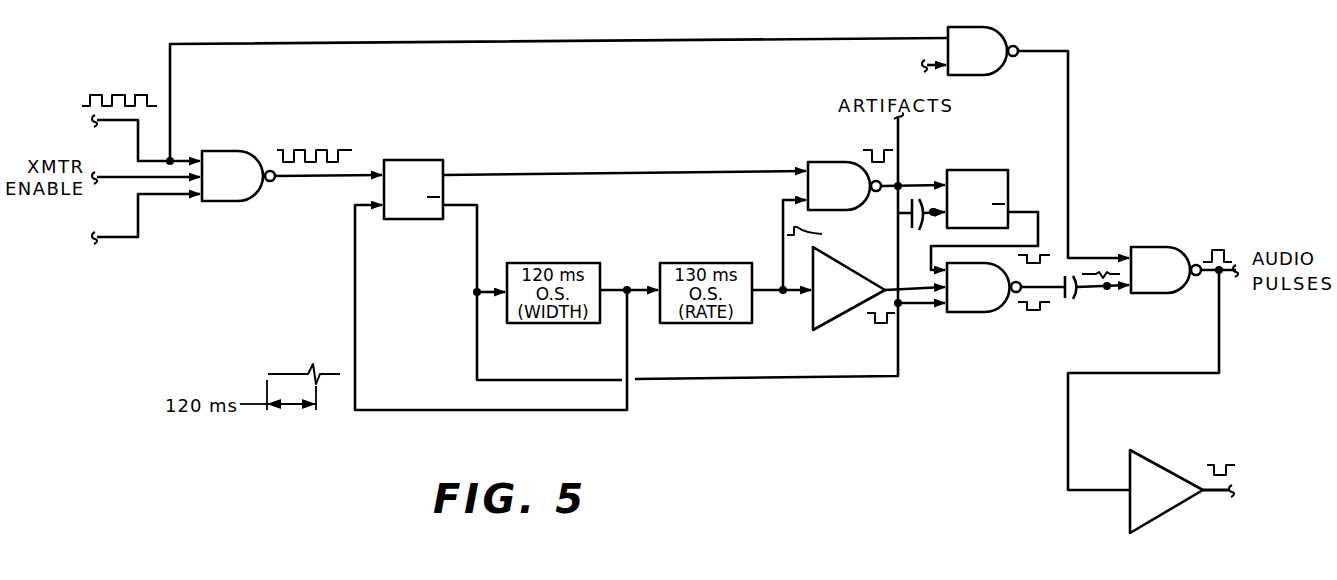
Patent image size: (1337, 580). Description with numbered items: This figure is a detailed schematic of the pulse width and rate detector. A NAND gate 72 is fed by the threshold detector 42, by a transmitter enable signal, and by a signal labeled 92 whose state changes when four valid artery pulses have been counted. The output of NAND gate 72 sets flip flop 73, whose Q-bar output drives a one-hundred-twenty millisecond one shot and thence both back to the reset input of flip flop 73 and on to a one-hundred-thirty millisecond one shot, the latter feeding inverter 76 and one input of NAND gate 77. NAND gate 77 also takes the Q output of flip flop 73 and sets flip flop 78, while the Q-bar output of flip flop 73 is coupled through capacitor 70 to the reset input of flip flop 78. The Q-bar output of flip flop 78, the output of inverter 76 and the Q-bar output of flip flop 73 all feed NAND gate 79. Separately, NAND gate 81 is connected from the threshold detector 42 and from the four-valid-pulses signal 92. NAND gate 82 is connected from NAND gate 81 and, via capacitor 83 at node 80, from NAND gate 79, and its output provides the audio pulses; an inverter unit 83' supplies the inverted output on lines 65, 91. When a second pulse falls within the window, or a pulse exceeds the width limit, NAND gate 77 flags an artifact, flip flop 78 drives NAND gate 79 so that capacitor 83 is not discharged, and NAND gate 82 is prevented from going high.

The threshold detector 42 is at (126, 128).
The capacitor 70 is at (933, 222).
The NAND gate 72 is at (236, 186).
The flip flop 73 is at (443, 160).
The inverter 76 is at (876, 277).
The NAND gate 77 is at (843, 196).
The flip flop 78 is at (1016, 150).
The NAND gate 79 is at (982, 299).
The junction node 80 is at (1107, 290).
The NAND gate 81 is at (982, 61).
The NAND gate 82 is at (1165, 281).
The capacitor 83 is at (1075, 306).
The inverter unit 83' is at (1166, 483).
The output line 65 is at (1252, 483).
The output line 91 is at (1252, 491).
The flip-flop Q outputs 92 is at (82, 226).